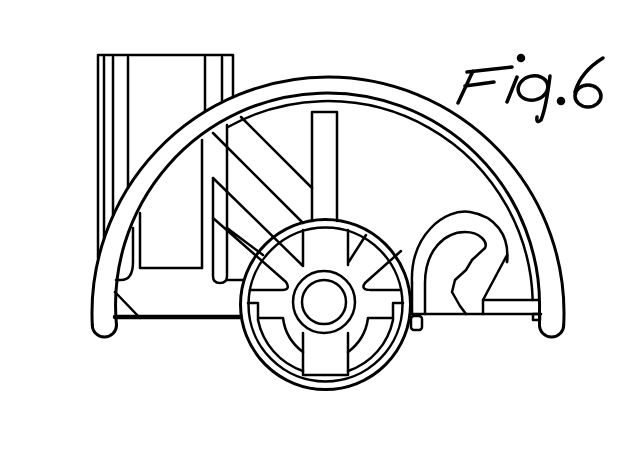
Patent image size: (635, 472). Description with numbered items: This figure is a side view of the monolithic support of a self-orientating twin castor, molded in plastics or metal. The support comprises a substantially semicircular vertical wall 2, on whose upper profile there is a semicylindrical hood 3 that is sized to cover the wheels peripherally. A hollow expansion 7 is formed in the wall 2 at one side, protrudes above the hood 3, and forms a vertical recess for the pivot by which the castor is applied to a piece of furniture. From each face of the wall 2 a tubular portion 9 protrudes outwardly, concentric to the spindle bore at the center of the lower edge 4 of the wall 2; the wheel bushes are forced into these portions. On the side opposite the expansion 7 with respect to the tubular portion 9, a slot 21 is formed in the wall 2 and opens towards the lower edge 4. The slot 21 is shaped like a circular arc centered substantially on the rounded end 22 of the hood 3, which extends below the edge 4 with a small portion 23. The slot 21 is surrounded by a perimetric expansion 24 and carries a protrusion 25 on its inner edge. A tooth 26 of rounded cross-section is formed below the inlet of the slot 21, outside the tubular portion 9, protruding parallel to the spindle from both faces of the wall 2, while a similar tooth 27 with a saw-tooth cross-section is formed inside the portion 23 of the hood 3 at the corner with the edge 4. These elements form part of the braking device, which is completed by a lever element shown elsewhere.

The vertical wall 2 is at (363, 123).
The semicylindrical hood 3 is at (303, 80).
The lower edge 4 is at (480, 315).
The hollow expansion 7 is at (122, 101).
The tubular portion 9 is at (258, 352).
The slot 21 is at (456, 246).
The rounded end 22 is at (553, 340).
The small portion 23 is at (552, 318).
The perimetric expansion 24 is at (480, 220).
The protrusion 25 is at (472, 262).
The tooth 26 is at (418, 332).
The tooth 27 is at (533, 320).